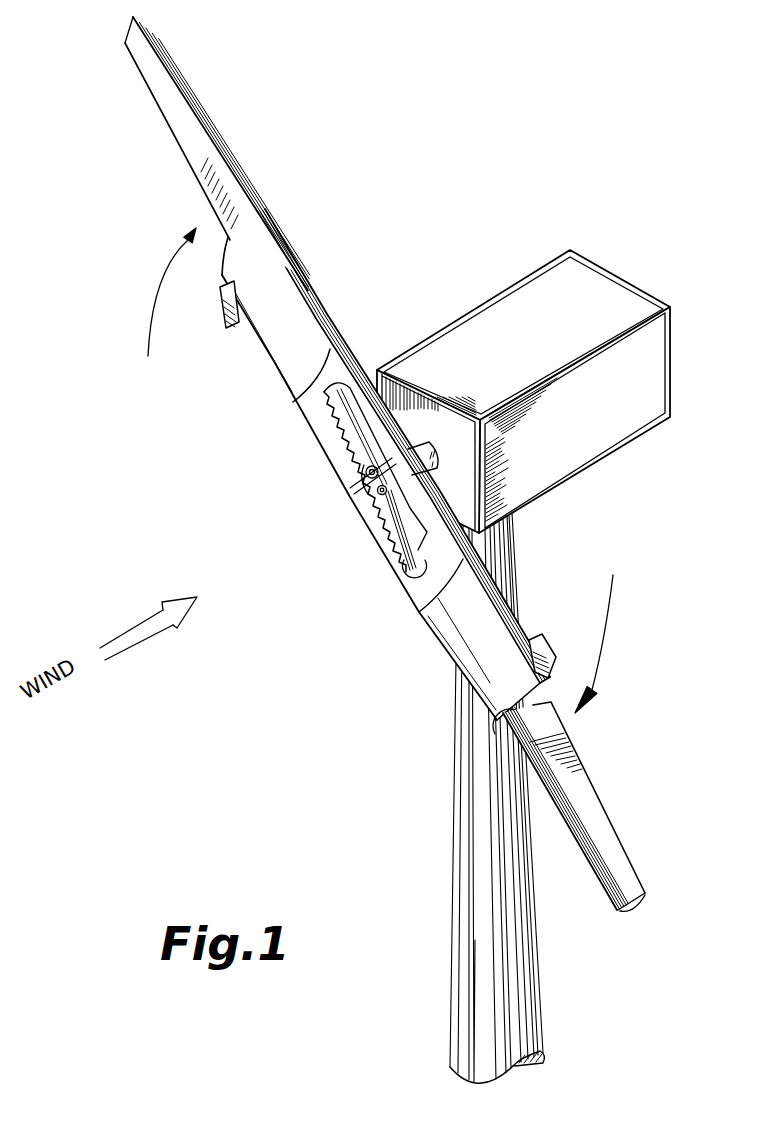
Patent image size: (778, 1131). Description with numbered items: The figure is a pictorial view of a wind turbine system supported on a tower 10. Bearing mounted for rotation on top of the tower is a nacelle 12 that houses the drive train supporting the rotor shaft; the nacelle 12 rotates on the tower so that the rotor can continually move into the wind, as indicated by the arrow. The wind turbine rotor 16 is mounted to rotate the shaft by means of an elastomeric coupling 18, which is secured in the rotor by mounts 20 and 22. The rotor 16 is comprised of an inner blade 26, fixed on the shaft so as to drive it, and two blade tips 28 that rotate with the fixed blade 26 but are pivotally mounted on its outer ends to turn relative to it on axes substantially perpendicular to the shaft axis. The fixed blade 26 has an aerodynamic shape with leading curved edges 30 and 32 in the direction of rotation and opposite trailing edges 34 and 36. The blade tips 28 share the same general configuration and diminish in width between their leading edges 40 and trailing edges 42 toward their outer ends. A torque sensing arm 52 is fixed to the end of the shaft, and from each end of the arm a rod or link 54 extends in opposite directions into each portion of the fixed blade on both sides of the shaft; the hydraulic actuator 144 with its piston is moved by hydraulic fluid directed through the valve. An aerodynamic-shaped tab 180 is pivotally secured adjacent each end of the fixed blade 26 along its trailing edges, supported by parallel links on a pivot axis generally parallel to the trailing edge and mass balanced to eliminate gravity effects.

The tower 10 is at (452, 843).
The nacelle 12 is at (614, 441).
The wind turbine rotor 16 is at (347, 515).
The elastomeric coupling 18 is at (379, 518).
The mount 20 is at (363, 450).
The mount 22 is at (392, 556).
The inner blade 26 is at (266, 381).
The blade tip 28 is at (406, 464).
The leading curved edge 30 is at (309, 292).
The leading curved edge 32 is at (473, 703).
The trailing edge 34 is at (257, 337).
The trailing edge 36 is at (490, 600).
The leading edge 40 is at (237, 173).
The trailing edge 42 is at (175, 133).
The torque sensing arm 52 is at (348, 476).
The rod or link 54 is at (348, 415).
The actuator 144 is at (492, 748).
The aerodynamic-shaped tab 180 is at (225, 322).